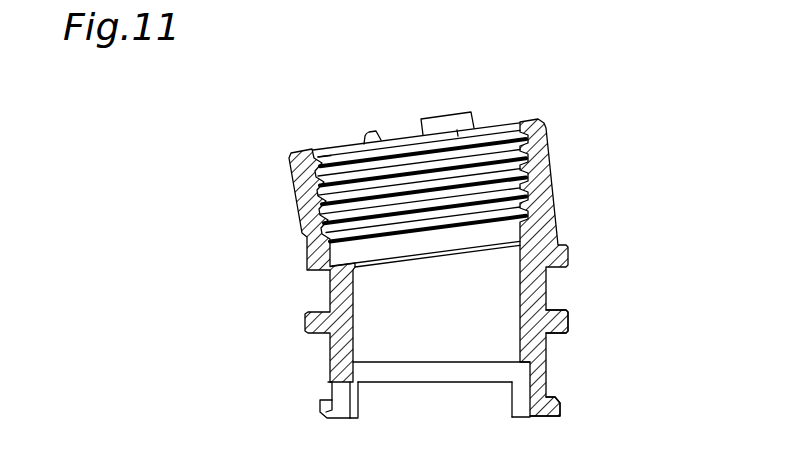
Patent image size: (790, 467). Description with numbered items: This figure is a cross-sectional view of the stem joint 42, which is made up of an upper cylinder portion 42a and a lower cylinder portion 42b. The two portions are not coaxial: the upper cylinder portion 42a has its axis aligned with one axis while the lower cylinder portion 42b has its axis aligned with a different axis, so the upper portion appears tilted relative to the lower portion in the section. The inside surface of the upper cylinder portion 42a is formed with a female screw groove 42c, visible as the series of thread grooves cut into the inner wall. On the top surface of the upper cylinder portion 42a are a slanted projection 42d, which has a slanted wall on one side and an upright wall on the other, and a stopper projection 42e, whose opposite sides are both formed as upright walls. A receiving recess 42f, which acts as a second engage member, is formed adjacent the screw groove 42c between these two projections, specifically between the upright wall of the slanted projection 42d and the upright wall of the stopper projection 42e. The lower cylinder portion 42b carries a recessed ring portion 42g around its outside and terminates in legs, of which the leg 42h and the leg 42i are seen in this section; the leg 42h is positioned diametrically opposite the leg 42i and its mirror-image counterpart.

The stem joint 42 is at (477, 255).
The upper cylinder portion 42a is at (625, 107).
The lower cylinder portion 42b is at (625, 272).
The female screw groove 42c is at (327, 158).
The slanted projection 42d is at (373, 133).
The stopper projection 42e is at (454, 122).
The receiving recess 42f is at (398, 134).
The recessed ring portion 42g is at (547, 294).
The leg 42h is at (548, 418).
The leg 42i is at (337, 412).